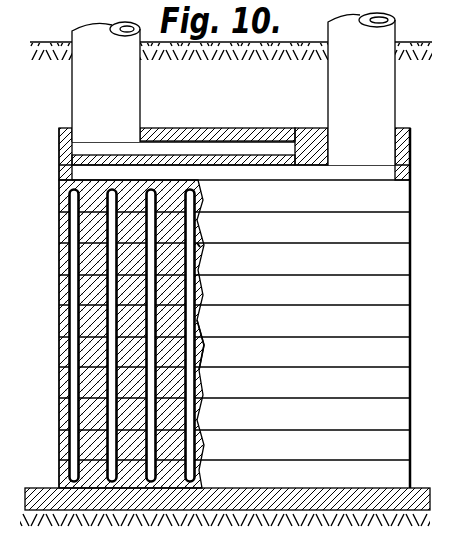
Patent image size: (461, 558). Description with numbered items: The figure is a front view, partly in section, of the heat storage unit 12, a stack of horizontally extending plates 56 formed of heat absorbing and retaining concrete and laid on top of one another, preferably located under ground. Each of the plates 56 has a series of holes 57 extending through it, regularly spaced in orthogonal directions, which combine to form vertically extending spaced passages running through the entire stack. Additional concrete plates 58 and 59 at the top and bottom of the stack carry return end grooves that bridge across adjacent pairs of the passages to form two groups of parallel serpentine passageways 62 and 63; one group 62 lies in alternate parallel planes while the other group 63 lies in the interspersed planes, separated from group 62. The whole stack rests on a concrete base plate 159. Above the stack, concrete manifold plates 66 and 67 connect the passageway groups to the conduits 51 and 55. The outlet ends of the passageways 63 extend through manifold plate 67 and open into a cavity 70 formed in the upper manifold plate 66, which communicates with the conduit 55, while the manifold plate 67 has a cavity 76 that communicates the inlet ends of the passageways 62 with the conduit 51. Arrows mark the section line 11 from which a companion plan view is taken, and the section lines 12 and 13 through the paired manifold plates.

The section line 11— 11 is at (333, 5).
The heat storage unit 12 is at (38, 138).
The section line 13— 13 is at (27, 143).
The conduit 51 is at (398, 35).
The conduit 55 is at (73, 31).
The horizontally extending plates 56 is at (398, 321).
The holes 57 is at (196, 363).
The top plate 58 is at (60, 200).
The bottom plate 59 is at (63, 475).
The passageways 62 is at (195, 213).
The passageways 63 is at (199, 248).
The upper manifold plate 66 is at (270, 130).
The manifold plate 67 is at (394, 164).
The cavity 70 is at (184, 146).
The cavity 76 is at (317, 172).
The base plate 159 is at (270, 484).